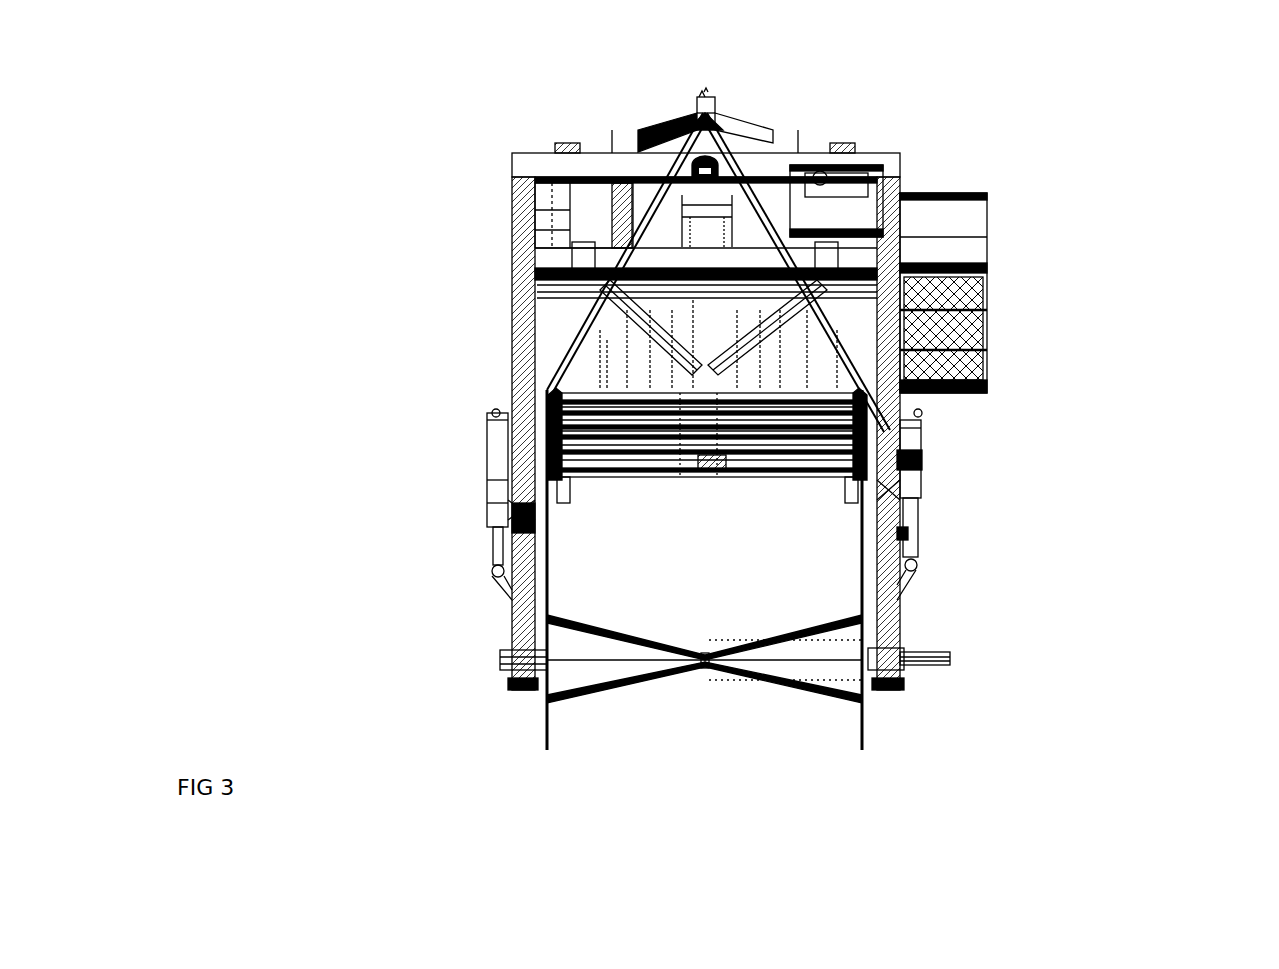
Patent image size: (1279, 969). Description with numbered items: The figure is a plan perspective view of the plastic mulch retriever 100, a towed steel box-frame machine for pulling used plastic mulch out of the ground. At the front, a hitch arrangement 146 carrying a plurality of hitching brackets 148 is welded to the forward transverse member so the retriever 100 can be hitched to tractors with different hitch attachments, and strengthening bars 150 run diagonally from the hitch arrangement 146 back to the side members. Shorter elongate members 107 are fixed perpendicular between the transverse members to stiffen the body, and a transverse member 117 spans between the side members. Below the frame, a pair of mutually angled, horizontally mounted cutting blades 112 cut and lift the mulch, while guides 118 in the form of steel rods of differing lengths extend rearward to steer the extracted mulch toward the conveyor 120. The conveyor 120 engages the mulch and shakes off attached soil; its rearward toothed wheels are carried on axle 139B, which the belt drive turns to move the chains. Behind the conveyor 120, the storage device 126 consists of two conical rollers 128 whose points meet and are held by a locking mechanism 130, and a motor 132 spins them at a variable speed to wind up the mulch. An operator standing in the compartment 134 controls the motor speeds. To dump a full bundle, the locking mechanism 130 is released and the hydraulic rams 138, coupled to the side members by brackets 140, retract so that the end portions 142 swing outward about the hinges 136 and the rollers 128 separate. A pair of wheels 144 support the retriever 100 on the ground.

The plastic mulch retriever 100 is at (1140, 130).
The shorter elongate members 107 is at (622, 195).
The cutting blades 112 is at (620, 342).
The transverse member 117 is at (532, 268).
The guides 118 is at (815, 368).
The conveyor 120 is at (707, 481).
The storage device 126 is at (704, 636).
The rollers 128 is at (704, 674).
The locking mechanism 130 is at (704, 655).
The motor 132 is at (947, 663).
The compartment 134 is at (940, 192).
The hinge 136 is at (487, 485).
The hydraulic ram 138 is at (488, 527).
The axle 139B is at (580, 477).
The brackets 140 is at (503, 403).
The end portions 142 is at (520, 627).
The wheels 144 is at (488, 543).
The hitch arrangement 146 is at (734, 235).
The hitching brackets 148 is at (700, 96).
The strengthening bars 150 is at (658, 125).